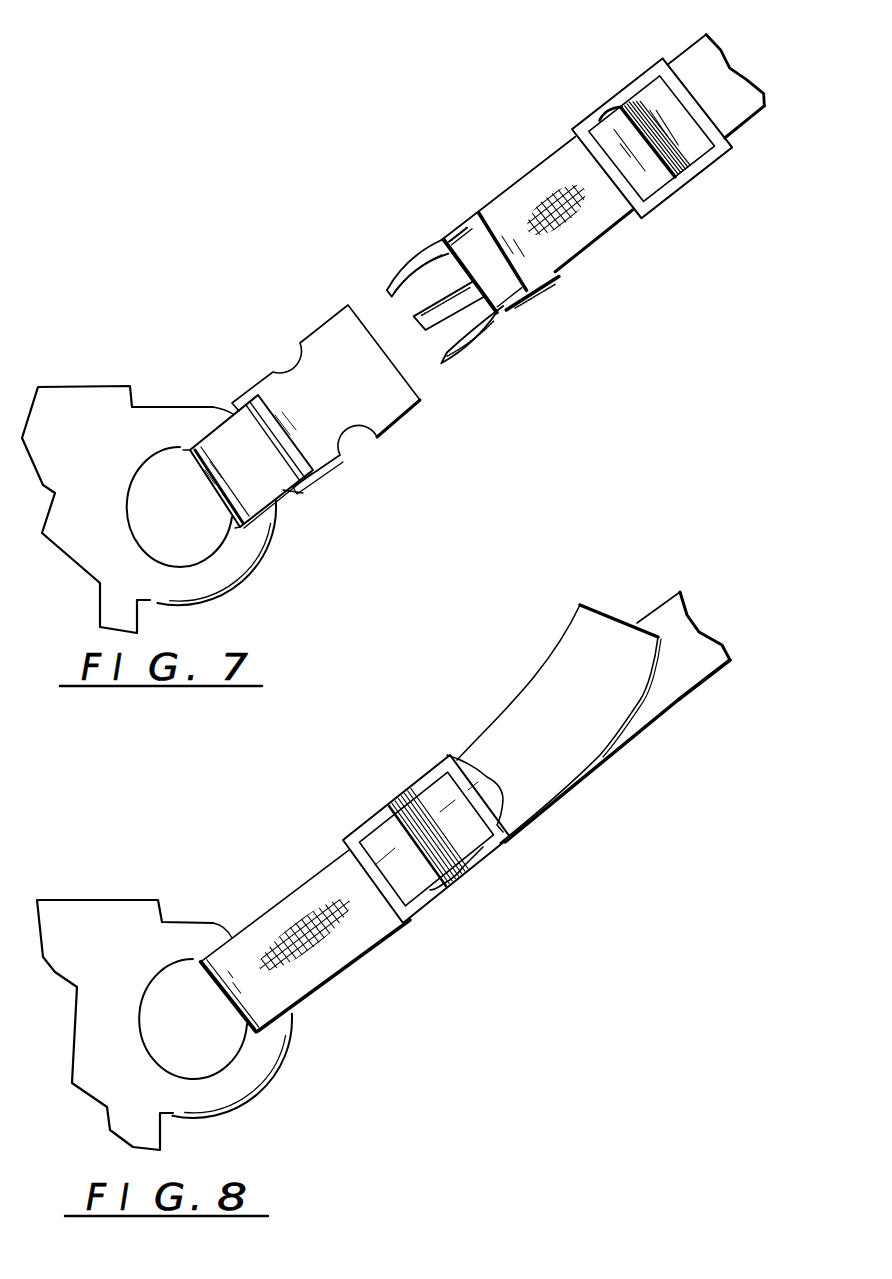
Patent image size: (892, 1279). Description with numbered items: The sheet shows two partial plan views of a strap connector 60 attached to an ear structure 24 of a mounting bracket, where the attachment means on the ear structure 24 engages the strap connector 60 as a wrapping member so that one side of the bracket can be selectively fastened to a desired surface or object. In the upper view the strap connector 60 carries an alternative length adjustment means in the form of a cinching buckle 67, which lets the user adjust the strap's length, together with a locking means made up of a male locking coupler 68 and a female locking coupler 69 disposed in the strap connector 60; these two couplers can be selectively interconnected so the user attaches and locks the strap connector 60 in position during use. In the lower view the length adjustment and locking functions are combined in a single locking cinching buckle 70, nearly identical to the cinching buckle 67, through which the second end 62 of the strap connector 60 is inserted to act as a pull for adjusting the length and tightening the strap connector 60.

In FIG. 7, the ear structure 24 is at (162, 410).
In FIG. 8, the ear structure 24 is at (95, 903).
In FIG. 7, the strap connector 60 is at (517, 183).
In FIG. 8, the strap connector 60 is at (655, 723).
In FIG. 8, the second end 62 is at (549, 665).
In FIG. 7, the cinching buckle 67 is at (668, 201).
In FIG. 7, the male locking coupler 68 is at (413, 247).
In FIG. 7, the female locking coupler 69 is at (398, 416).
In FIG. 8, the locking cinching buckle 70 is at (410, 786).